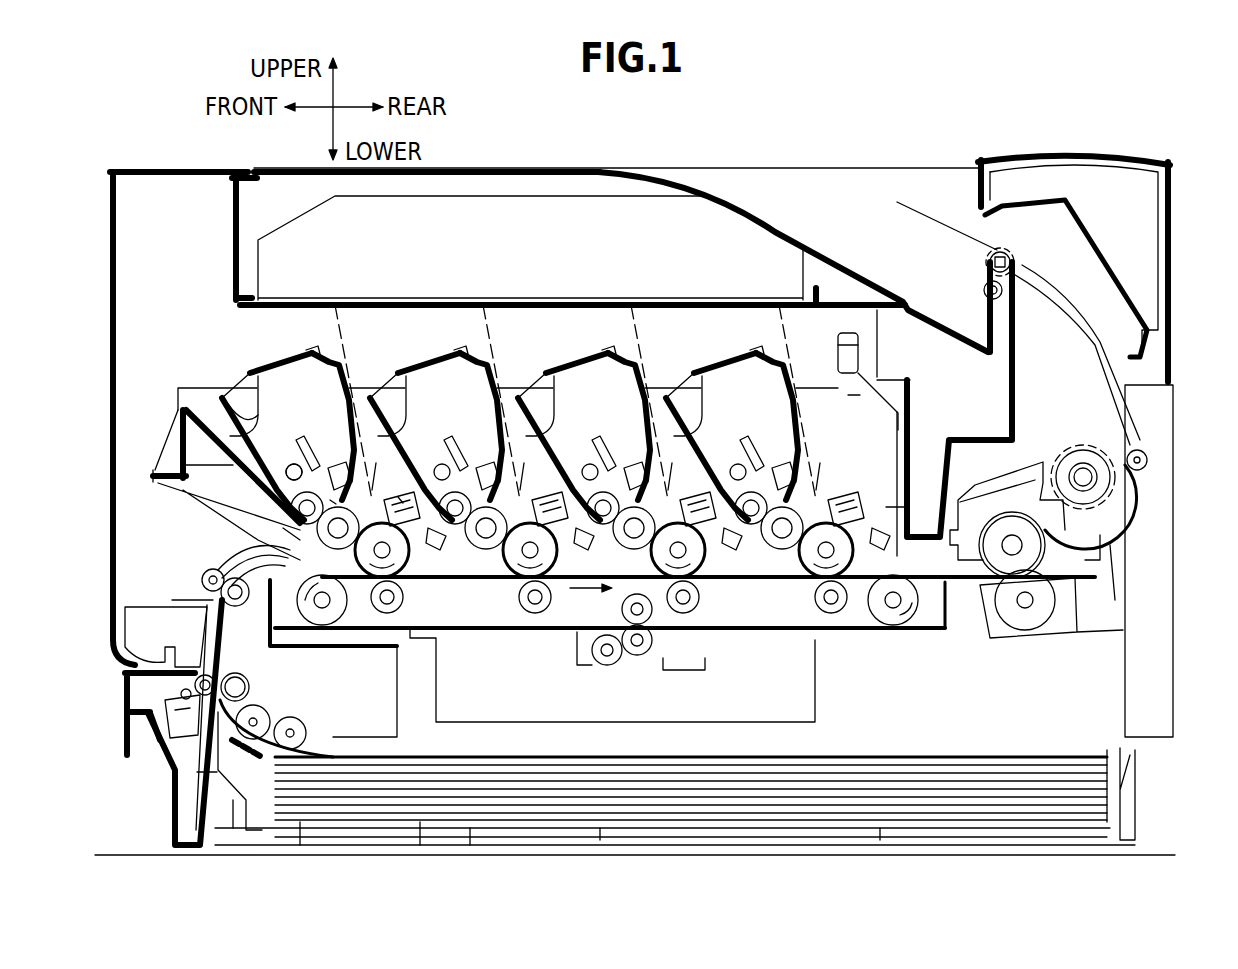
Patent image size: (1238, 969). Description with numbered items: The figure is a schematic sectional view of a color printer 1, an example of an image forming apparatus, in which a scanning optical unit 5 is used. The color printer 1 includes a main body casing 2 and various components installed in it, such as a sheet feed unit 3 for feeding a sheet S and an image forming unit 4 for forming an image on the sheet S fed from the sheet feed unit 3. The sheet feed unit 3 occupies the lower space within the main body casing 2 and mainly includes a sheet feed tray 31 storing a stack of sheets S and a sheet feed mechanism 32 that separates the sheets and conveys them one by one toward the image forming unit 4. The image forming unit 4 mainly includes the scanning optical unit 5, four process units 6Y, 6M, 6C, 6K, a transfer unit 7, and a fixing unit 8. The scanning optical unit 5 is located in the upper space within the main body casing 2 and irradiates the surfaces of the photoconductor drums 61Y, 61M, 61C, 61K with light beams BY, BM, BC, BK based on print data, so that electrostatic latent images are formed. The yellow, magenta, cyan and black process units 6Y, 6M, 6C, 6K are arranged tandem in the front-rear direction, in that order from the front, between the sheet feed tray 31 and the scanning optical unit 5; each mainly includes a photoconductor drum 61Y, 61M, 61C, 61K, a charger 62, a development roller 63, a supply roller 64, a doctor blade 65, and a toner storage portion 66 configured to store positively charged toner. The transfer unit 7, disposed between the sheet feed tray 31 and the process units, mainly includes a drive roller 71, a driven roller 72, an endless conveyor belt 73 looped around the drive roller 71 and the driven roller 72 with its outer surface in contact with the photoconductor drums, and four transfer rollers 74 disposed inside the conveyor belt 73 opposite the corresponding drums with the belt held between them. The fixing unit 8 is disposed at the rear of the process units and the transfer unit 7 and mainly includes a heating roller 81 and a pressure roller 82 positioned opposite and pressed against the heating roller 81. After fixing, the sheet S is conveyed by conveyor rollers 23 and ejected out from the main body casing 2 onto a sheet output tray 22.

The color printer 1 is at (717, 110).
The main body casing 2 is at (789, 166).
The sheet output tray 22 is at (817, 243).
The conveyor rollers 23 is at (1017, 275).
The sheet feed unit 3 is at (108, 702).
The sheet feed tray 31 is at (122, 728).
The sheet feed mechanism 32 is at (280, 690).
The image forming unit 4 is at (195, 357).
The scanning optical unit 5 is at (543, 210).
The yellow process unit 6Y is at (296, 352).
The magenta process unit 6M is at (444, 352).
The cyan process cartridge 6C is at (592, 352).
The black process unit 6K is at (740, 352).
The photoconductor drum 61Y is at (364, 578).
The photoconductor drum 61M is at (518, 580).
The photoconductor drum 61C is at (662, 580).
The photoconductor drum 61K is at (812, 575).
The charger 62 is at (400, 495).
The development roller 63 is at (287, 528).
The supply roller 64 is at (285, 470).
The doctor blade 65 is at (327, 500).
The toner storage portion 66 is at (300, 407).
The transfer unit 7 is at (877, 645).
The drive roller 71 is at (900, 576).
The driven roller 72 is at (300, 606).
The conveyor belt 73 is at (528, 632).
The transfer rollers 74 is at (818, 603).
The fixing unit 8 is at (972, 642).
The heating roller 81 is at (1007, 527).
The pressure roller 82 is at (1037, 620).
The light beam BY is at (347, 363).
The light beam BM is at (495, 363).
The light beam BC is at (643, 363).
The light beam BK is at (790, 361).
The sheet S is at (932, 202).